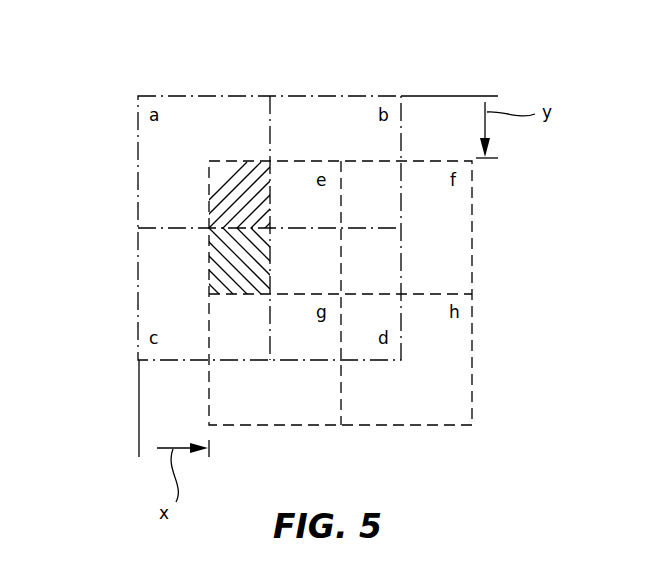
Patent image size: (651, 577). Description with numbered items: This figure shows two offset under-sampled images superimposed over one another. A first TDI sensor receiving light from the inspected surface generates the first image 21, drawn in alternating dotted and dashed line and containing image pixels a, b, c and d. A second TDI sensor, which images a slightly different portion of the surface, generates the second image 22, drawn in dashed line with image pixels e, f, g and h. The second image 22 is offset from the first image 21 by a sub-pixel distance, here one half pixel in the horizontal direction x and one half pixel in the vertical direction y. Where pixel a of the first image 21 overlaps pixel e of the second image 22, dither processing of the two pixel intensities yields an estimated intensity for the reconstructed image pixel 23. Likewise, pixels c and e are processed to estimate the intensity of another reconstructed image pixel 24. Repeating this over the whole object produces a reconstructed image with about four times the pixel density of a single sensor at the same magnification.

The first image 21 is at (137, 128).
The second image 22 is at (472, 168).
The reconstructed image pixel 23 is at (243, 160).
The reconstructed image pixel 24 is at (222, 257).